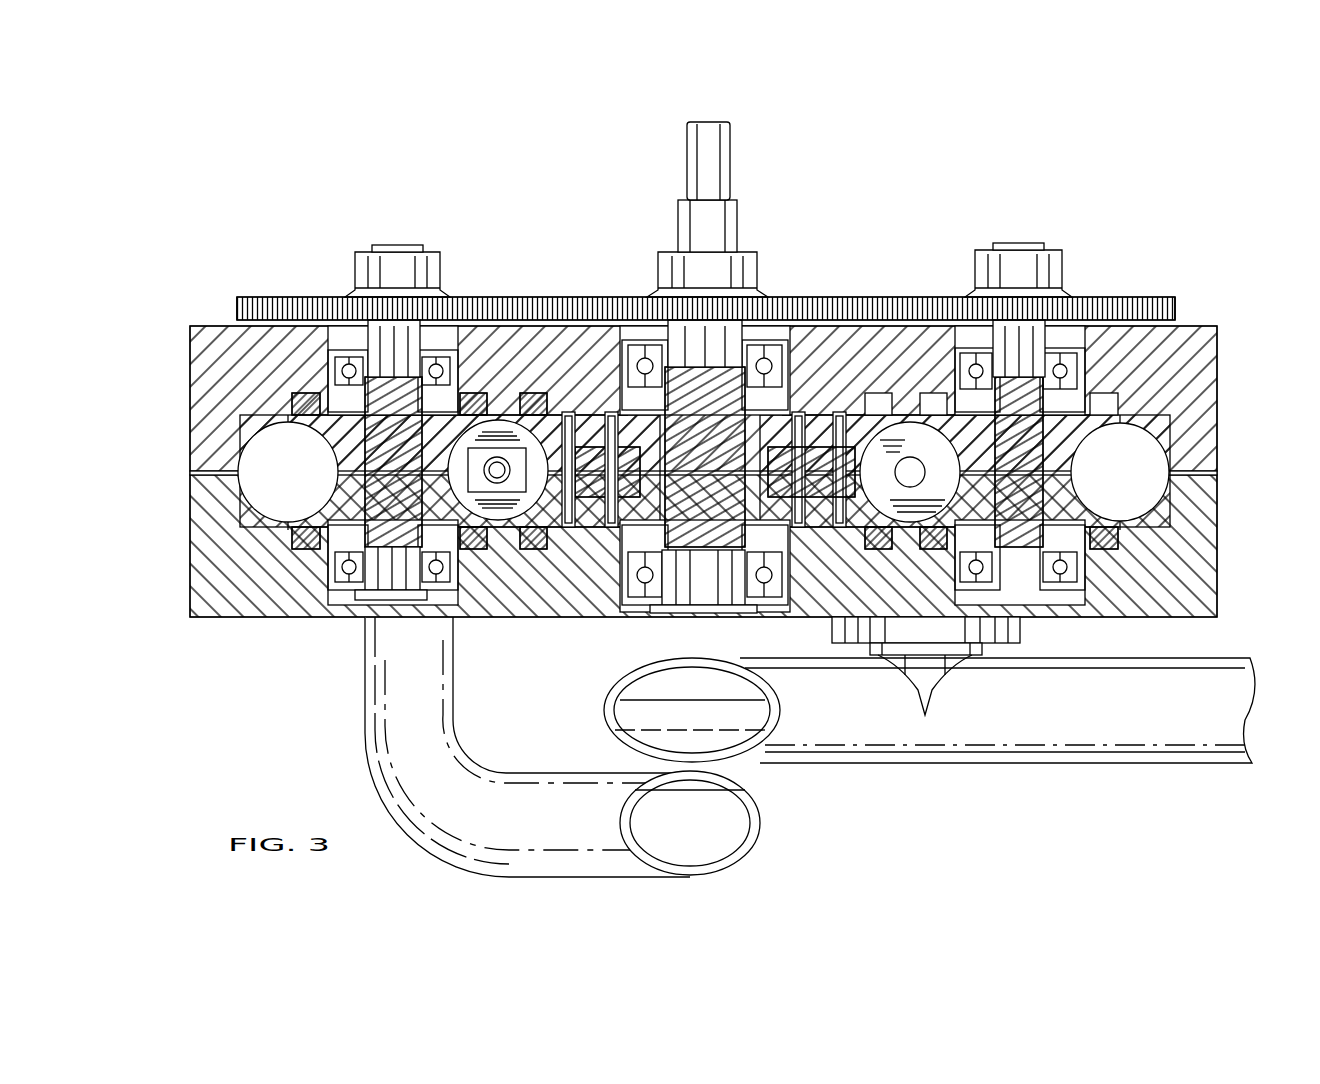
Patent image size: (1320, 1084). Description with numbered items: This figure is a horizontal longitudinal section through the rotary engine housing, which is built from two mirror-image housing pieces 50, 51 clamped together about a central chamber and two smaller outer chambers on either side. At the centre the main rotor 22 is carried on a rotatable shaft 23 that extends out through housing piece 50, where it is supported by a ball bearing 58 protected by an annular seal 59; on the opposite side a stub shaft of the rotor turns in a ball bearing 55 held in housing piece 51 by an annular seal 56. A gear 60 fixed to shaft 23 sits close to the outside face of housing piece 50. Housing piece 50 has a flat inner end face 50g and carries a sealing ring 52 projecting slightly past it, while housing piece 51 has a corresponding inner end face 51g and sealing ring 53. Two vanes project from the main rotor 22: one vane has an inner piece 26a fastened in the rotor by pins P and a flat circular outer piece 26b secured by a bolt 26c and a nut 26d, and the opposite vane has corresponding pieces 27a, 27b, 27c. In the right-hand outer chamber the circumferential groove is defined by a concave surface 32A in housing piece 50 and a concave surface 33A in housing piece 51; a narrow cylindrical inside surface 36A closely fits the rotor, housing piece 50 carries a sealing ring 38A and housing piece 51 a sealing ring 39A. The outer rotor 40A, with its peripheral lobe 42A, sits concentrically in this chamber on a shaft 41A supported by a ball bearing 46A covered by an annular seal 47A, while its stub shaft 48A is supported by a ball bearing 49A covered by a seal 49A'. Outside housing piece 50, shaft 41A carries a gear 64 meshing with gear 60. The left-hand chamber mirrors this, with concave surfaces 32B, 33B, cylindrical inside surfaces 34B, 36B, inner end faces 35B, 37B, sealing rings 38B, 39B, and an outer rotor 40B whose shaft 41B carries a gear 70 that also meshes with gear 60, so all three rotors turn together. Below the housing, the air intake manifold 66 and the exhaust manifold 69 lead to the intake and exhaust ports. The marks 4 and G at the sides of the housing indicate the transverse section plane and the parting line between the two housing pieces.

The main rotor 22 is at (710, 485).
The rotatable shaft 23 is at (737, 208).
The inner piece 26a is at (640, 450).
The outer piece 26b is at (455, 440).
The bolt 26c is at (458, 478).
The nut 26d is at (455, 445).
The gear hub 27a is at (768, 465).
The gear 27b is at (935, 450).
The gear portion 27c is at (878, 455).
The concave surface 32A is at (1150, 430).
The concave surface 32B is at (270, 433).
The concave surface 33A is at (1155, 495).
The concave surface 33B is at (245, 497).
The cylindrical inside surface 34B is at (306, 397).
The inner end face 35B is at (340, 412).
The cylindrical inside surface 36A is at (1142, 524).
The cylindrical inside surface 36B is at (288, 532).
The inner end face 37B is at (350, 524).
The sealing ring 38A is at (1090, 388).
The sealing ring 38B is at (462, 388).
The sealing ring 39A is at (1120, 535).
The sealing ring 39B is at (452, 562).
The outer rotor 40A is at (1030, 479).
The outer rotor 40B is at (450, 471).
The shaft 41A is at (1035, 340).
The shaft 41B is at (425, 340).
The peripheral lobe 42A is at (470, 525).
The ball bearing 46A is at (935, 392).
The annular seal 47A is at (928, 400).
The stub shaft 48A is at (1020, 620).
The ball bearing 49A is at (1033, 566).
The seal 49A' is at (1106, 565).
The housing piece 50 is at (205, 360).
The inner end face 50g is at (578, 418).
The housing piece 51 is at (286, 617).
The inner end face 51g is at (650, 530).
The sealing ring 52 is at (533, 405).
The sealing ring 53 is at (520, 553).
The ball bearing 55 is at (714, 584).
The annular seal 56 is at (795, 572).
The ball bearing 58 is at (780, 356).
The annular seal 59 is at (788, 372).
The gear 60 is at (838, 297).
The gear 64 is at (1155, 297).
The air intake manifold 66 is at (480, 775).
The exhaust manifold 69 is at (976, 763).
The gear 70 is at (265, 297).
The pins P is at (598, 507).
The section line 4 is at (150, 480).
The gap G is at (190, 473).